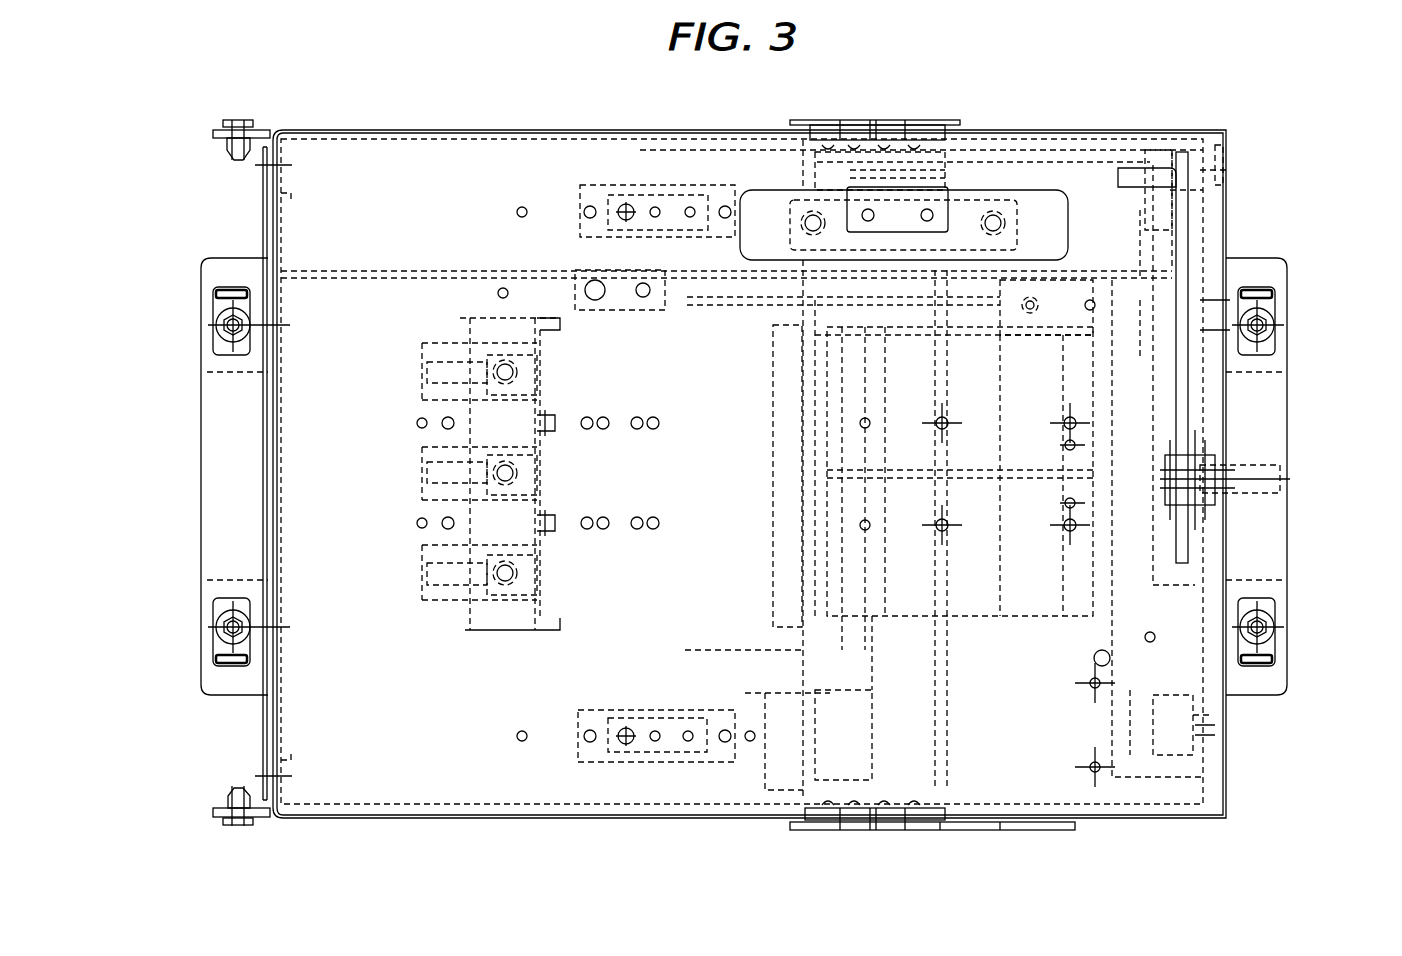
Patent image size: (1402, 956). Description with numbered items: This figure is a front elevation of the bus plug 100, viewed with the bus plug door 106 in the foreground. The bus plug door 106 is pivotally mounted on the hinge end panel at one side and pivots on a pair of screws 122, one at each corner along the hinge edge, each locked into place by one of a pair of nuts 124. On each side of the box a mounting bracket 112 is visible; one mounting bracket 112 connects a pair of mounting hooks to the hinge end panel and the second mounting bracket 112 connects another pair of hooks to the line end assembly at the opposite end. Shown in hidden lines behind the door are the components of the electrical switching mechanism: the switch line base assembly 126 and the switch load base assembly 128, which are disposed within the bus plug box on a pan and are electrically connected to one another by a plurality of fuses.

The bus plug 100 is at (1166, 93).
The bus plug door 106 is at (440, 785).
The mounting bracket 112 is at (203, 485).
The screws 122 is at (227, 122).
The nuts 124 is at (223, 142).
The switch line base assembly 126 is at (770, 322).
The switch load base assembly 128 is at (455, 322).